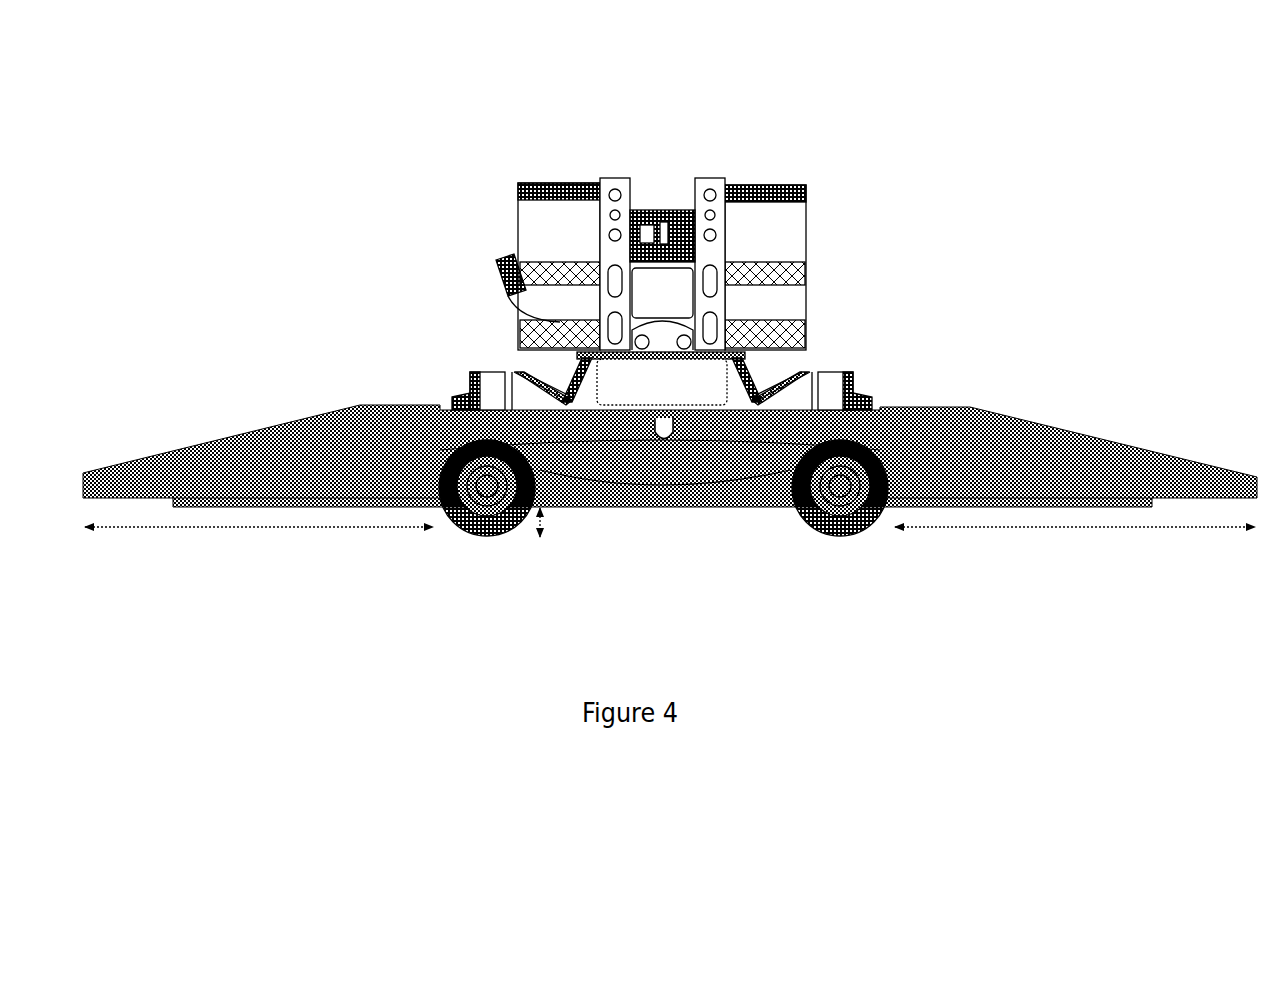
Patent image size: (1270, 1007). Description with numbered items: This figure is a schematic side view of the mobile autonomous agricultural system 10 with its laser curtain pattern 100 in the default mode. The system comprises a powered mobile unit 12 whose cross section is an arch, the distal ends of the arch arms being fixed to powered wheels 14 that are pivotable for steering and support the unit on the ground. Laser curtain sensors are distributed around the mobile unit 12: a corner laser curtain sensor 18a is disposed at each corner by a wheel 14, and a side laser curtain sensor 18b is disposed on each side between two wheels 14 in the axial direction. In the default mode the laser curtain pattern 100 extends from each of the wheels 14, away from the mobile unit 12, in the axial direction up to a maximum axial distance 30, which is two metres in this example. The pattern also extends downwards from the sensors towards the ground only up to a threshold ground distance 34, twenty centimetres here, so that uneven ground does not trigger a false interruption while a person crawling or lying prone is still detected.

The mobile autonomous agricultural system 10 is at (452, 135).
The powered mobile unit 12 is at (806, 195).
The powered wheels 14 is at (478, 528).
The corner laser curtain sensor 18a is at (462, 398).
The side laser curtain sensor 18b is at (664, 432).
The maximum axial distance 30 is at (180, 527).
The threshold ground distance 34 is at (545, 523).
The laser curtain pattern 100 is at (1050, 415).